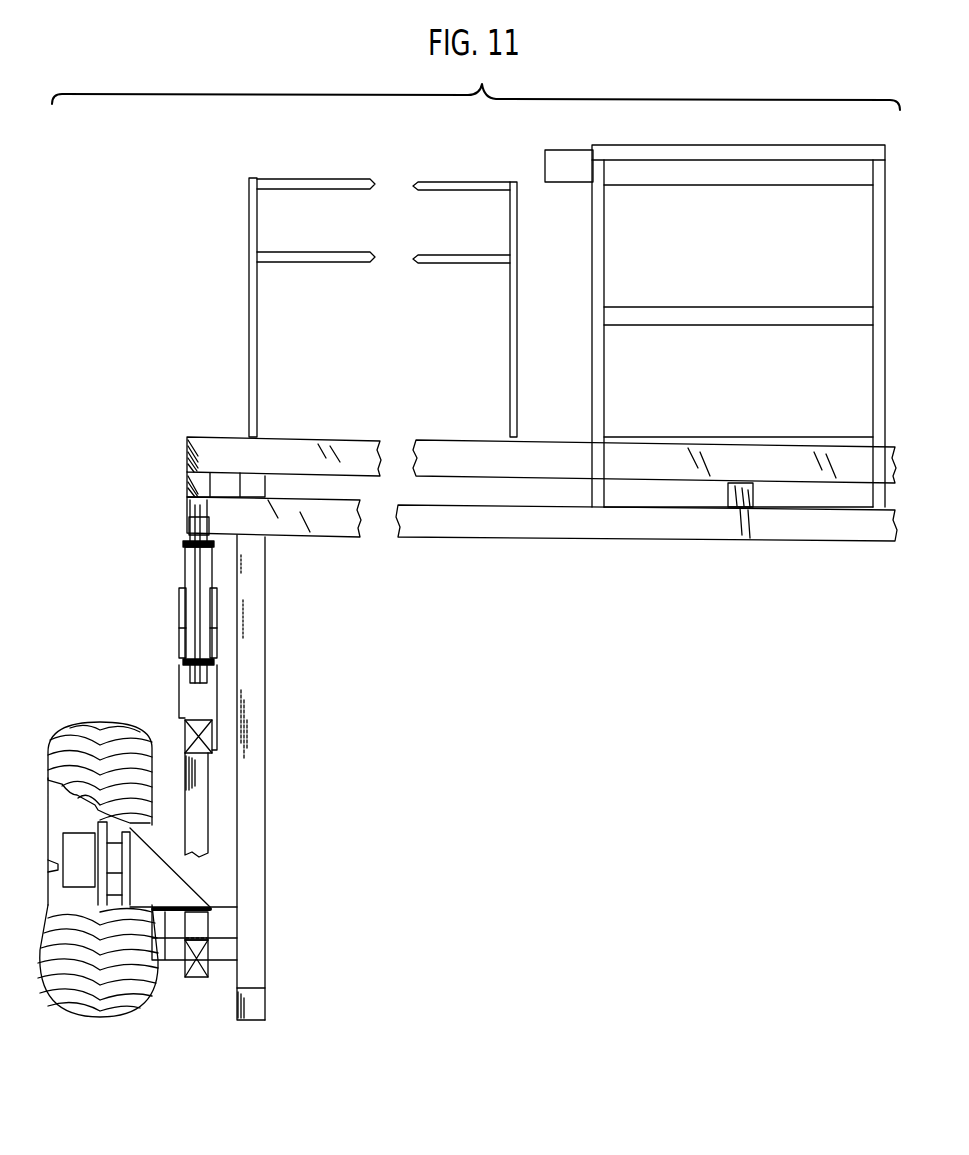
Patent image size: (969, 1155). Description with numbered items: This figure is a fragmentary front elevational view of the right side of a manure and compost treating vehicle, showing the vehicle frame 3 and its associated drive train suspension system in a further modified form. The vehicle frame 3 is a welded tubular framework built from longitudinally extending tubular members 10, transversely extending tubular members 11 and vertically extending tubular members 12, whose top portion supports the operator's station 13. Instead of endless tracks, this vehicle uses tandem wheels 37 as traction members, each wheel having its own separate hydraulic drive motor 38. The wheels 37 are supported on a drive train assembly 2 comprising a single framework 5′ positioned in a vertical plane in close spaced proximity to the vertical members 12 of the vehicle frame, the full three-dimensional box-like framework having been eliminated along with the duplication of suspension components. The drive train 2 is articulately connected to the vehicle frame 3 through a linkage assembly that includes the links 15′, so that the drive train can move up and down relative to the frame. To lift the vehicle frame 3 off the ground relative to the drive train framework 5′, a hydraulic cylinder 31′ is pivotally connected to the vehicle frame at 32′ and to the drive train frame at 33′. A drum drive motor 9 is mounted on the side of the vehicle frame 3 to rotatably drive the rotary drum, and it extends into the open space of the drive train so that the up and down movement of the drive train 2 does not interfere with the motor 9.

The drive train 2 is at (124, 891).
The vehicle frame 3 is at (228, 346).
The single framework 5′ is at (198, 784).
The drum drive motor 9 is at (222, 910).
The longitudinally extending tubular members 10 is at (248, 1003).
The transversely extending tubular members 11 is at (330, 472).
The vertically extending tubular members 12 is at (255, 785).
The operator's station 13 is at (570, 233).
The links 15′ is at (182, 615).
The hydraulic cylinder 31′ is at (195, 580).
The pivotal connection 32′ is at (206, 524).
The pivotal connection 33′ is at (215, 678).
The tandem wheels 37 is at (125, 1010).
The hydraulic drive motor 38 is at (86, 845).